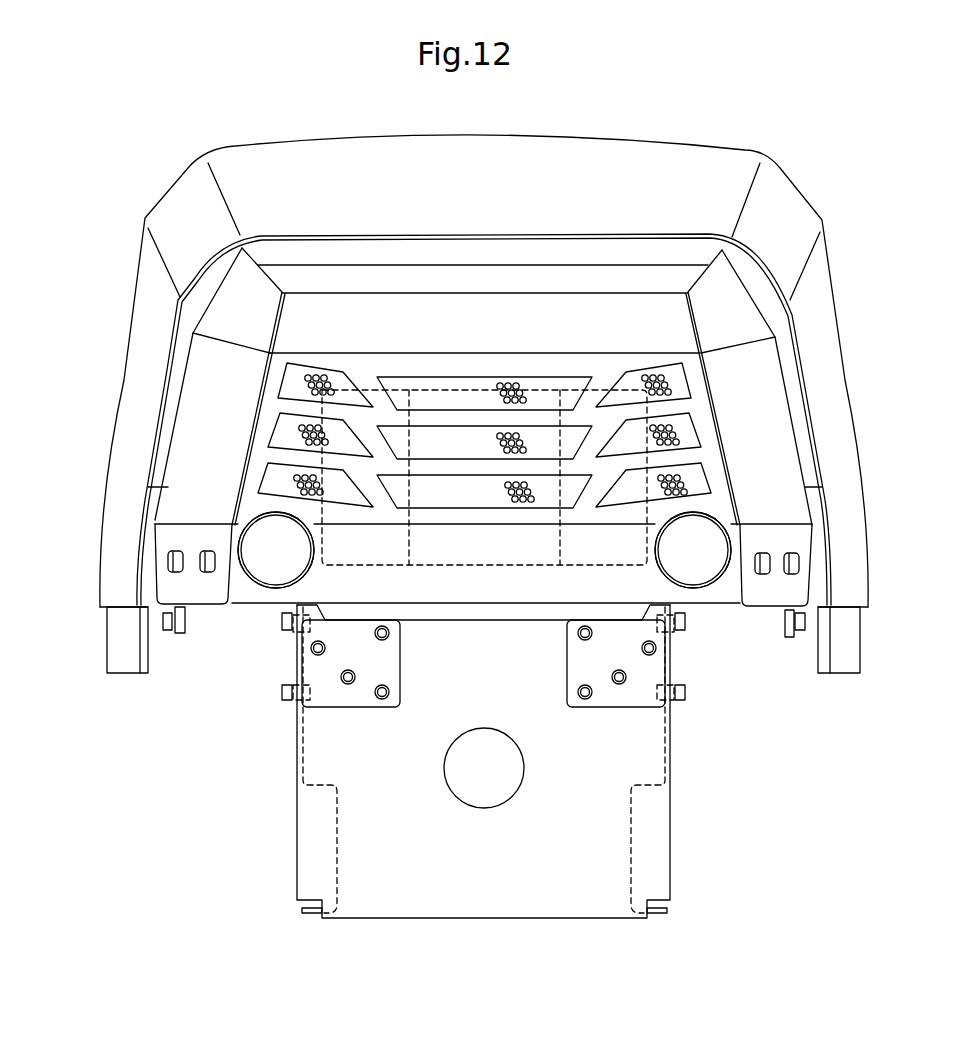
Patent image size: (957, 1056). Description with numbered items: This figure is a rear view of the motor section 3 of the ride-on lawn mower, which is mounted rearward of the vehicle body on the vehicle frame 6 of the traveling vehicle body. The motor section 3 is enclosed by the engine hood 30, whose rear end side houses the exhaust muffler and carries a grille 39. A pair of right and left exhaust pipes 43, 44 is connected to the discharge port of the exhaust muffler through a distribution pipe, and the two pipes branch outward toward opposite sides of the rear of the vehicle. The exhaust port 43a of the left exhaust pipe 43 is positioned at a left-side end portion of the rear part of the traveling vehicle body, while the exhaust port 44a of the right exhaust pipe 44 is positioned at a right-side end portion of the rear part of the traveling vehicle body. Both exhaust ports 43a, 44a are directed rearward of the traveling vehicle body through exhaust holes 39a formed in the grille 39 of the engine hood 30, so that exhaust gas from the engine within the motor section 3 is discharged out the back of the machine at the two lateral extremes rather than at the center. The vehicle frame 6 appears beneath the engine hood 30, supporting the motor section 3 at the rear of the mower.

The motor section 3 is at (459, 404).
The engine hood 30 is at (133, 342).
The grille 39 is at (506, 370).
The exhaust holes 39a is at (312, 572).
The left exhaust pipe 43 is at (246, 522).
The exhaust port of the left exhaust pipe 43a is at (273, 562).
The right exhaust pipe 44 is at (718, 516).
The exhaust port of the right exhaust pipe 44a is at (697, 553).
The vehicle frame 6 is at (672, 820).